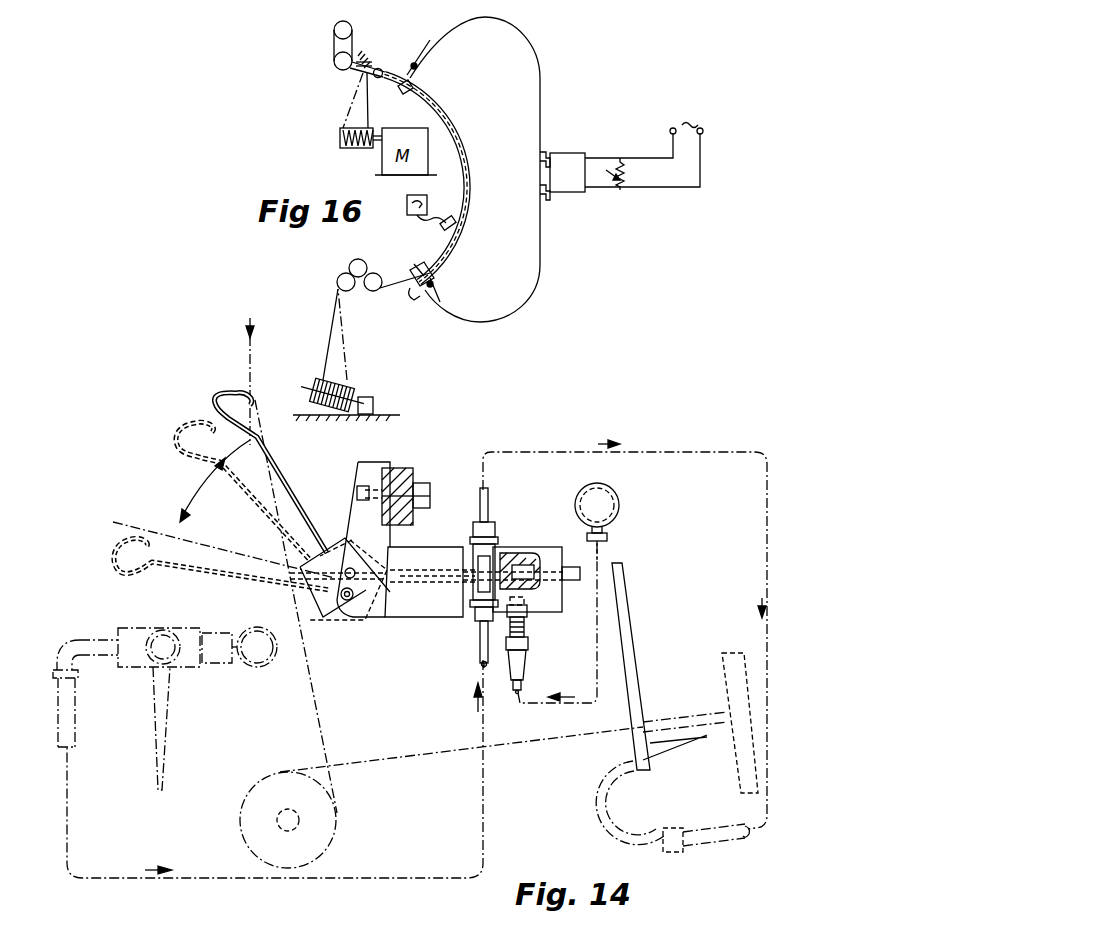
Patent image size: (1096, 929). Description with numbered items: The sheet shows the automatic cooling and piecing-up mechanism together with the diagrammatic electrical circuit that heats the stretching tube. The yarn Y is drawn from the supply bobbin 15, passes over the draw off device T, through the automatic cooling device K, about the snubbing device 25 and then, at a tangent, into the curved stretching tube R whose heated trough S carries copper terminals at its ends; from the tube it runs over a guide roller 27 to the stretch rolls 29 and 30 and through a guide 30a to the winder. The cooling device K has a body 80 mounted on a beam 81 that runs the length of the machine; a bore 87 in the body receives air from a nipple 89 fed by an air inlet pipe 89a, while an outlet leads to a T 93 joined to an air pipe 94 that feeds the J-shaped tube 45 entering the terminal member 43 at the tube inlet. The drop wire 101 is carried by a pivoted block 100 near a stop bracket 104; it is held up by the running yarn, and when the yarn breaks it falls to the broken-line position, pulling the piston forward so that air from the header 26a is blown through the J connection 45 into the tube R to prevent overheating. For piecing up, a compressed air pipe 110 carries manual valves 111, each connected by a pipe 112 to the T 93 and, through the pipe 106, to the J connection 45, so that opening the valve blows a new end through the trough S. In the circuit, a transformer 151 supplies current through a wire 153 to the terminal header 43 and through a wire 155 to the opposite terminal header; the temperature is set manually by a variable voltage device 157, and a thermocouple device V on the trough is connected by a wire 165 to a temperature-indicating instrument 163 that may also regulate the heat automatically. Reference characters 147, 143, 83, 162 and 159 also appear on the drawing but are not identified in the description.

In FIG. 16, the stretch roll 30 is at (345, 24).
In FIG. 16, the stretch roll 29 is at (340, 69).
In FIG. 16, the guide 30a is at (371, 55).
In FIG. 16, the clamp 147 is at (400, 69).
In FIG. 16, the guide roller 27 is at (379, 79).
In FIG. 16, the trough S is at (410, 90).
In FIG. 14, the trough S is at (678, 712).
In FIG. 16, the wire 155 is at (529, 36).
In FIG. 16, the wire 153 is at (541, 268).
In FIG. 16, the transformer 151 is at (573, 149).
In FIG. 16, the lead wire 162 is at (641, 157).
In FIG. 16, the lead wire 159 is at (668, 189).
In FIG. 16, the variable voltage device 157 is at (620, 188).
In FIG. 16, the thermocouple device V is at (448, 223).
In FIG. 16, the temperature-indicating instrument 163 is at (432, 224).
In FIG. 16, the wire 165 is at (421, 273).
In FIG. 16, the tension rollers 143 is at (383, 272).
In FIG. 16, the draw off device T is at (346, 266).
In FIG. 16, the yarn Y is at (332, 318).
In FIG. 14, the yarn Y is at (252, 352).
In FIG. 16, the supply bobbin 15 is at (318, 382).
In FIG. 14, the supply bobbin 15 is at (116, 535).
In FIG. 14, the drop wire 101 is at (293, 478).
In FIG. 14, the block 100 is at (335, 620).
In FIG. 14, the stop bracket 104 is at (420, 612).
In FIG. 14, the body 80 is at (424, 615).
In FIG. 14, the beam 81 is at (410, 464).
In FIG. 14, the piston rod 83 is at (428, 566).
In FIG. 14, the air pipe 94 is at (491, 507).
In FIG. 14, the T 93 is at (470, 594).
In FIG. 14, the pipe 112 is at (480, 646).
In FIG. 14, the bore 87 is at (547, 560).
In FIG. 14, the nipple 89 is at (528, 637).
In FIG. 14, the air inlet pipe 89a is at (527, 672).
In FIG. 14, the header 26a is at (620, 508).
In FIG. 14, the automatic cooling device K is at (448, 490).
In FIG. 14, the copper terminal member 43 is at (636, 668).
In FIG. 14, the curved stretching tube R is at (728, 654).
In FIG. 14, the J-shaped tube 45 is at (600, 806).
In FIG. 14, the pipe 106 is at (700, 830).
In FIG. 14, the snubbing device 25 is at (240, 828).
In FIG. 14, the compressed air pipe 110 is at (258, 668).
In FIG. 14, the manual valve 111 is at (168, 726).